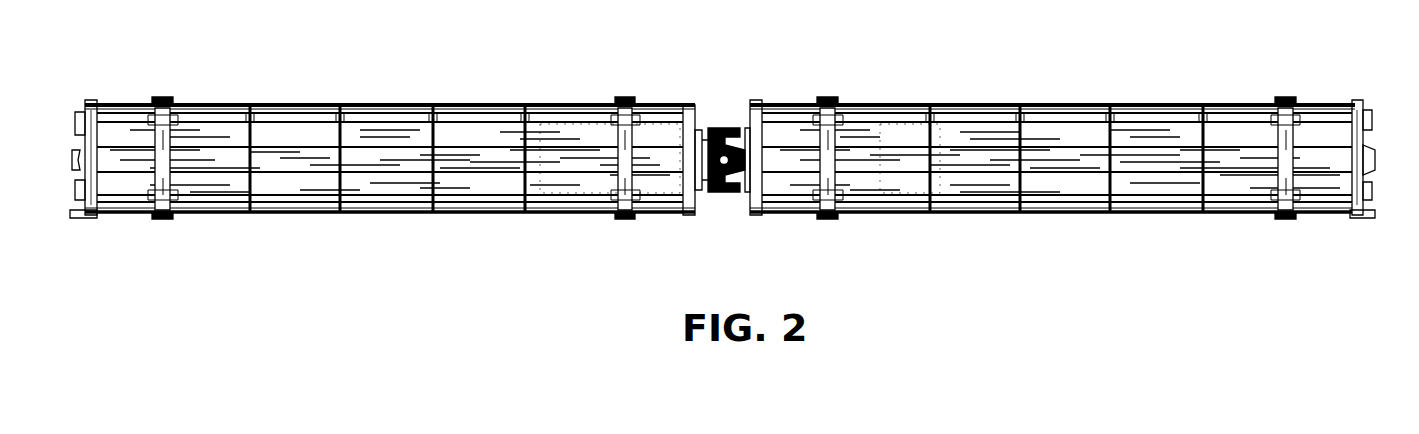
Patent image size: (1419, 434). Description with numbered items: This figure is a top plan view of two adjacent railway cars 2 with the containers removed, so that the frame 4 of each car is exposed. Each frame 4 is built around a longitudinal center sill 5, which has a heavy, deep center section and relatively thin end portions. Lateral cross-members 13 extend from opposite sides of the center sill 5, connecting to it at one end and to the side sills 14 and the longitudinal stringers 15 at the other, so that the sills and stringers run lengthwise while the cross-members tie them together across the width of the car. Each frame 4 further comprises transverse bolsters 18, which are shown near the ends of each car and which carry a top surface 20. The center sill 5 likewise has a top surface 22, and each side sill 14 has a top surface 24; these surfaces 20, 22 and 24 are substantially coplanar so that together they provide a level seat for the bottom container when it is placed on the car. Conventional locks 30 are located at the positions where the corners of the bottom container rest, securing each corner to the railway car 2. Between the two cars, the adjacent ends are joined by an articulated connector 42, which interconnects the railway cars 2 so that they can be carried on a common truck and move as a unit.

The railway car 2 is at (550, 100).
The frame 4 is at (395, 222).
The longitudinal center sill 5 is at (410, 160).
The lateral cross-member 13 is at (279, 104).
The side sill 14 is at (216, 104).
The longitudinal stringer 15 is at (488, 104).
The transverse bolster 18 is at (138, 104).
The top surface of transverse bolster 20 is at (610, 214).
The top surface of center sill 22 is at (573, 160).
The top surface of side sill 24 is at (331, 104).
The lock 30 is at (163, 100).
The articulated connector 42 is at (745, 104).